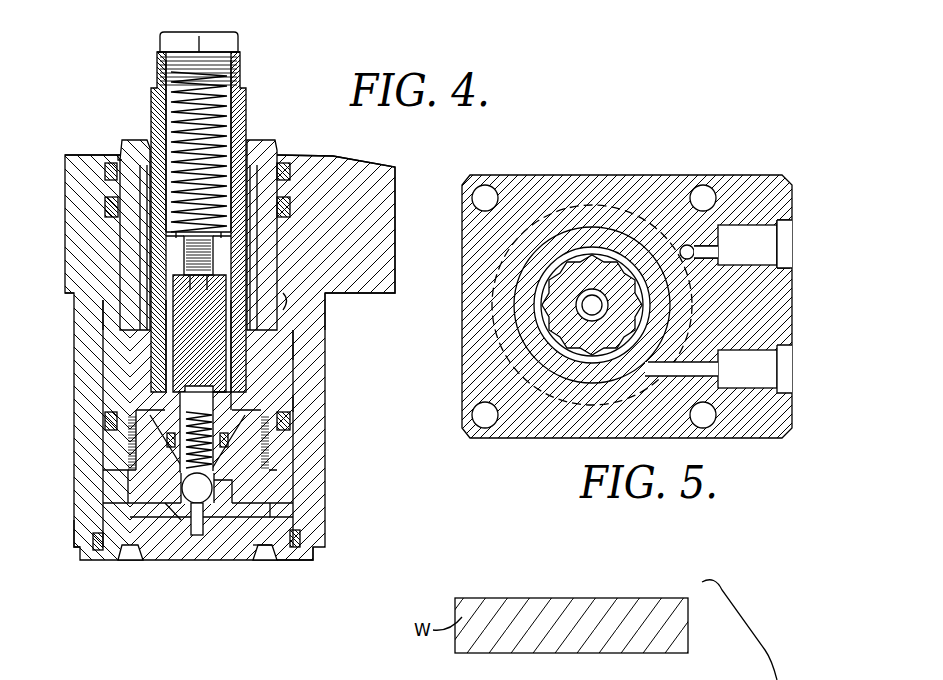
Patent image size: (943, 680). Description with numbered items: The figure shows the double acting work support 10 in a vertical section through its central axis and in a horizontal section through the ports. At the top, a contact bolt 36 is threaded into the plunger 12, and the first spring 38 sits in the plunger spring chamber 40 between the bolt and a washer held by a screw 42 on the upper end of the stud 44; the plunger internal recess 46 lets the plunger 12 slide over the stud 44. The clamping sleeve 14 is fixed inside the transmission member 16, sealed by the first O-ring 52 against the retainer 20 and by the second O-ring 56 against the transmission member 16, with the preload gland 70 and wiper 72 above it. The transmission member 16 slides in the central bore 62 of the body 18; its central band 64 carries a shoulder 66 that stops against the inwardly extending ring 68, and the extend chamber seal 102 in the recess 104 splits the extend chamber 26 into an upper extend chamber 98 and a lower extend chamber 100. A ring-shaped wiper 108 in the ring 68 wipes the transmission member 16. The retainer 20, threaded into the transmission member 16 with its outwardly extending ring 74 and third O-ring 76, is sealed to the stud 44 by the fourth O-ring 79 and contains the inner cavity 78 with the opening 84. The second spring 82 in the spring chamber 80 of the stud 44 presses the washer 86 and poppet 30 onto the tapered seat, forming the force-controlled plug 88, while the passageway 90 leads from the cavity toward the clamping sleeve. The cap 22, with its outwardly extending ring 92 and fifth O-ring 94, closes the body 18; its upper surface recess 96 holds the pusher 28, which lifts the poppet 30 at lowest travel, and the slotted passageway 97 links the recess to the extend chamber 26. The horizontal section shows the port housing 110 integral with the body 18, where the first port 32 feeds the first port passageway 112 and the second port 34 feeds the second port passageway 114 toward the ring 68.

In FIG. 4, the work support 10 is at (325, 58).
In FIG. 4, the plunger 12 is at (230, 70).
In FIG. 5, the plunger 12 is at (573, 273).
In FIG. 4, the clamping sleeve 14 is at (270, 239).
In FIG. 5, the clamping sleeve 14 is at (621, 236).
In FIG. 4, the transmission member 16 is at (283, 128).
In FIG. 5, the transmission member 16 is at (556, 395).
In FIG. 4, the body 18 is at (80, 530).
In FIG. 4, the retainer 20 is at (275, 446).
In FIG. 4, the cap 22 is at (295, 580).
In FIG. 4, the extend chamber 26 is at (93, 282).
In FIG. 4, the pusher 28 is at (190, 536).
In FIG. 4, the poppet 30 is at (205, 495).
In FIG. 5, the first port 32 is at (790, 258).
In FIG. 5, the second port 34 is at (787, 380).
In FIG. 4, the contact bolt 36 is at (227, 40).
In FIG. 4, the first spring 38 is at (220, 110).
In FIG. 4, the plunger spring chamber 40 is at (150, 97).
In FIG. 4, the screw 42 is at (173, 248).
In FIG. 5, the screw 42 is at (602, 299).
In FIG. 4, the stud 44 is at (175, 368).
In FIG. 5, the stud 44 is at (627, 327).
In FIG. 4, the plunger internal recess 46 is at (220, 282).
In FIG. 4, the first O-ring 52 is at (138, 418).
In FIG. 4, the second O-ring 56 is at (110, 190).
In FIG. 4, the central bore 62 is at (300, 323).
In FIG. 4, the central band 64 is at (290, 362).
In FIG. 4, the shoulder 66 is at (110, 340).
In FIG. 4, the inwardly extending ring 68 is at (285, 298).
In FIG. 4, the preload gland 70 is at (143, 172).
In FIG. 4, the wiper 72 is at (138, 143).
In FIG. 4, the outwardly extending ring 74 is at (128, 502).
In FIG. 4, the third O-ring 76 is at (277, 490).
In FIG. 4, the inner cavity 78 is at (222, 484).
In FIG. 4, the fourth O-ring 79 is at (160, 445).
In FIG. 4, the spring chamber 80 is at (238, 402).
In FIG. 4, the second spring 82 is at (193, 410).
In FIG. 4, the opening 84 is at (205, 530).
In FIG. 4, the washer 86 is at (167, 452).
In FIG. 4, the force-controlled plug 88 is at (180, 520).
In FIG. 4, the passageway 90 is at (290, 432).
In FIG. 4, the outwardly extending ring 92 is at (110, 560).
In FIG. 4, the fifth O-ring 94 is at (303, 537).
In FIG. 4, the upper surface recess 96 is at (253, 560).
In FIG. 4, the slotted passageway 97 is at (287, 512).
In FIG. 4, the upper extend chamber 98 is at (110, 317).
In FIG. 4, the lower extend chamber 100 is at (108, 487).
In FIG. 4, the extend chamber seal 102 is at (107, 415).
In FIG. 4, the recess 104 is at (314, 400).
In FIG. 4, the wiper 108 is at (116, 157).
In FIG. 4, the port housing 110 is at (370, 185).
In FIG. 5, the port housing 110 is at (757, 427).
In FIG. 5, the first port passageway 112 is at (718, 245).
In FIG. 5, the second port passageway 114 is at (718, 362).